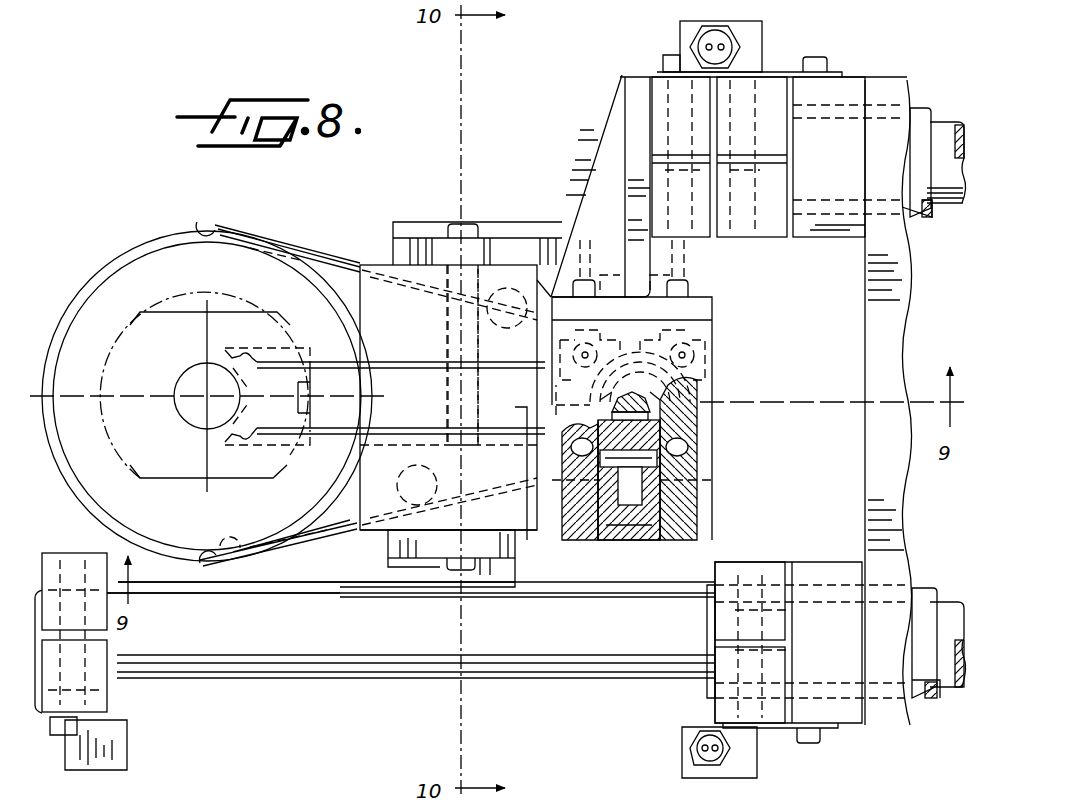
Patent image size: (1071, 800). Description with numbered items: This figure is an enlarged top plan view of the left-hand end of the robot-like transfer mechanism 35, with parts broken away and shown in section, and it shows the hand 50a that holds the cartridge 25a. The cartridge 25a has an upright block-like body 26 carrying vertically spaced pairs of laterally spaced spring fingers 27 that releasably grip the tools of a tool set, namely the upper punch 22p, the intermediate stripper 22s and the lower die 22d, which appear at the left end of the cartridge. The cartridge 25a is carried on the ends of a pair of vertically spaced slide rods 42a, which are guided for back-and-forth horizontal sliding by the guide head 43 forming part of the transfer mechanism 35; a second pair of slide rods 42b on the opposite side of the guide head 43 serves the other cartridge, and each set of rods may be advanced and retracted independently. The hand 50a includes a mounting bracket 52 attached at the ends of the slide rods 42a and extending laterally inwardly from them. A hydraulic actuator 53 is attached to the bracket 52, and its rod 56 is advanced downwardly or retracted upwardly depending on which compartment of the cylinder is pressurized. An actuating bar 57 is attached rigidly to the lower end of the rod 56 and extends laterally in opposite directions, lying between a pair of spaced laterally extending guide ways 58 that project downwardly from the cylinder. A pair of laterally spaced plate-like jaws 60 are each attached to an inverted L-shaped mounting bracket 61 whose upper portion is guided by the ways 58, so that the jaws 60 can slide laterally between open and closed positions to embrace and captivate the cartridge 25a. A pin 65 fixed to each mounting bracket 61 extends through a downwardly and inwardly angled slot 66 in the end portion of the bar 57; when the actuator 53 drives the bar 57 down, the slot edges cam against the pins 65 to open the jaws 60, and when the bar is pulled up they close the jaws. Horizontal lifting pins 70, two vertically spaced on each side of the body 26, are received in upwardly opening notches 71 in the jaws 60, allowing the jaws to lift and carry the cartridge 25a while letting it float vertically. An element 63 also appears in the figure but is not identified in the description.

The lower die 22d is at (165, 232).
The intermediate stripper 22s is at (140, 262).
The upper punch 22p is at (150, 312).
The block-like body 26 is at (328, 540).
The spring fingers 27 is at (330, 262).
The cartridge 25a is at (376, 270).
The jaws 60 is at (408, 226).
The lifting elements 70 is at (468, 233).
The notches 71 is at (487, 240).
The mounting bracket 52 is at (610, 122).
The hand 50a is at (553, 245).
The transfer mechanism 35 is at (755, 250).
The guide head 43 is at (865, 441).
The slide rods 42a is at (945, 125).
The slide rods 42b is at (285, 675).
The hydraulic actuator 53 is at (716, 366).
The rod 56 is at (700, 402).
The actuating bar 57 is at (690, 428).
The pin 65 is at (680, 458).
The angled slot 66 is at (680, 478).
The guide ways 58 is at (700, 500).
The mounting bracket 61 is at (650, 540).
The lower member 63 is at (660, 799).